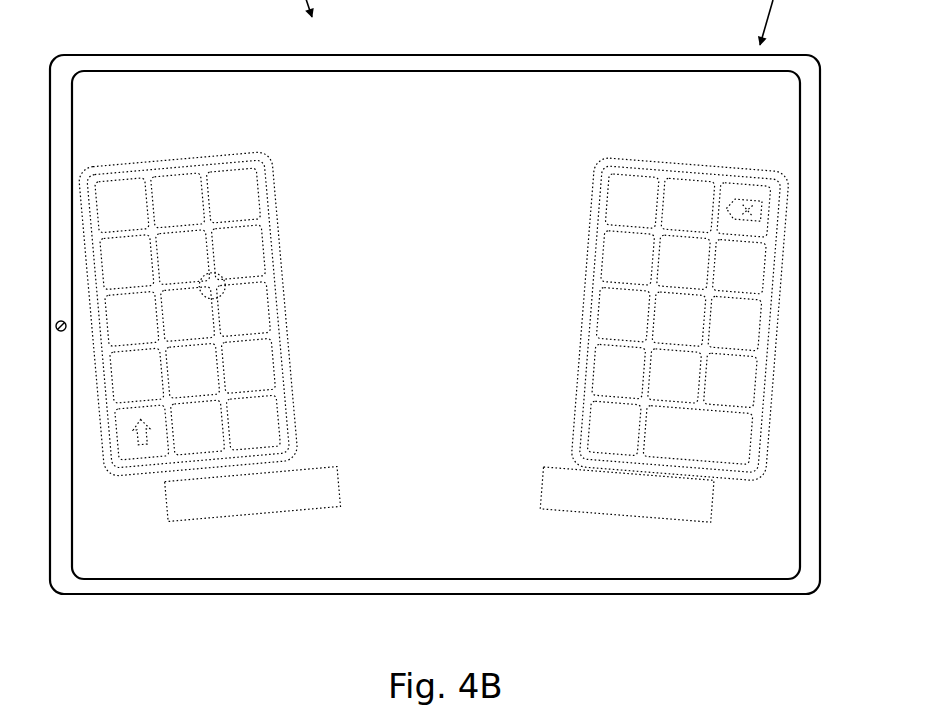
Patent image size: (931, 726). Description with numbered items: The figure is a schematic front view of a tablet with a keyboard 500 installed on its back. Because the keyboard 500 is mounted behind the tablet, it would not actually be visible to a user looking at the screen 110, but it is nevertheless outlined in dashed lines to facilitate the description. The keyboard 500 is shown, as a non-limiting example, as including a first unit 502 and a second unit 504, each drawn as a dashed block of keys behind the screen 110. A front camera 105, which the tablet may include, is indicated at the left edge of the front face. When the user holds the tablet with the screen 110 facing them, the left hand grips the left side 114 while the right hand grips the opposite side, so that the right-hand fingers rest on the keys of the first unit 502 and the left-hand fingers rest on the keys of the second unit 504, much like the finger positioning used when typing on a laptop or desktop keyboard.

The front camera 105 is at (53, 337).
The screen 110 is at (547, 552).
The left side 114 is at (113, 608).
The keyboard 500 is at (562, 230).
The first unit 502 is at (562, 342).
The second unit 504 is at (310, 448).